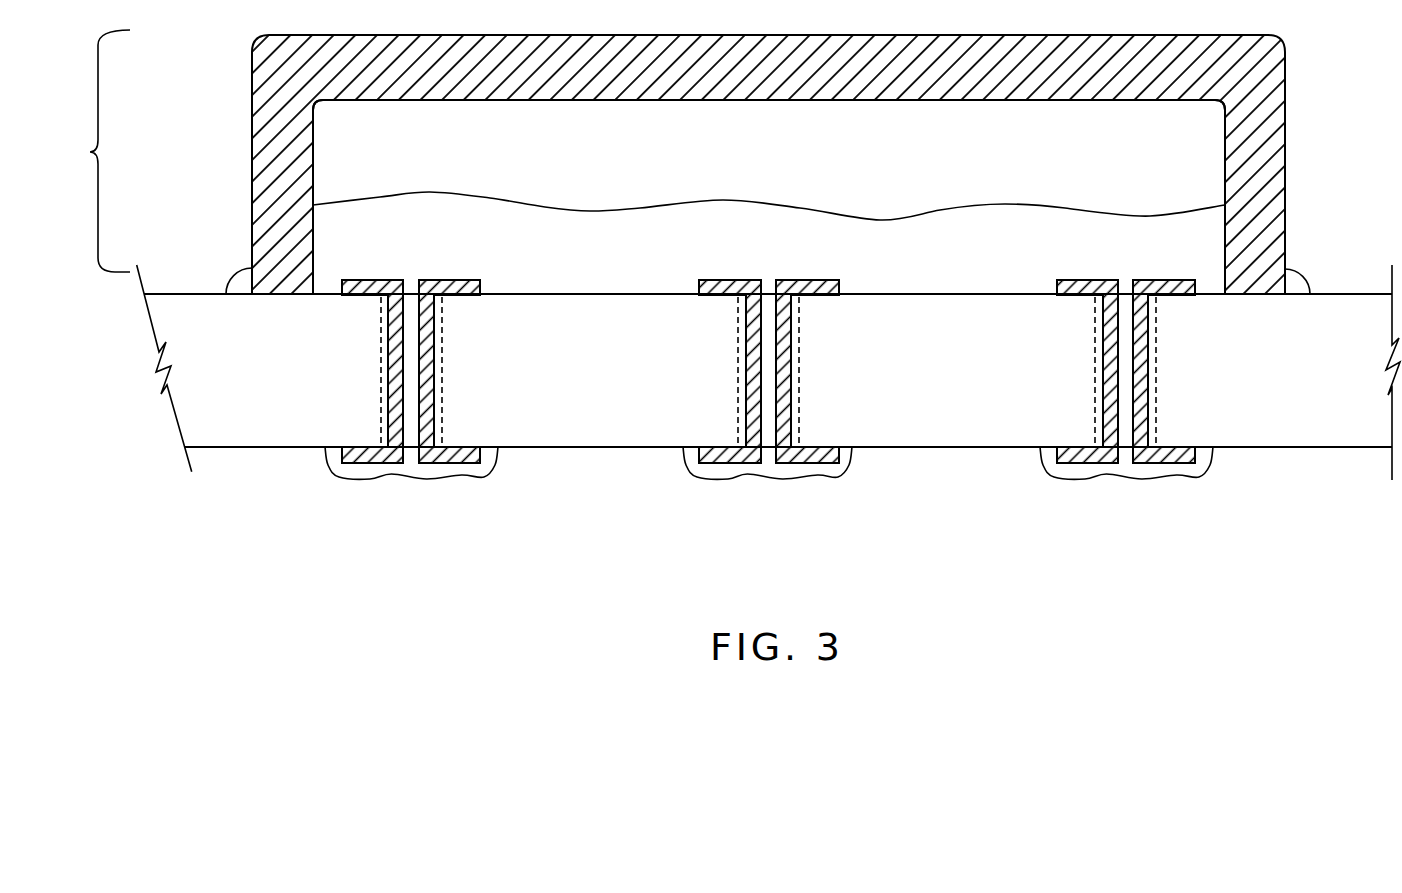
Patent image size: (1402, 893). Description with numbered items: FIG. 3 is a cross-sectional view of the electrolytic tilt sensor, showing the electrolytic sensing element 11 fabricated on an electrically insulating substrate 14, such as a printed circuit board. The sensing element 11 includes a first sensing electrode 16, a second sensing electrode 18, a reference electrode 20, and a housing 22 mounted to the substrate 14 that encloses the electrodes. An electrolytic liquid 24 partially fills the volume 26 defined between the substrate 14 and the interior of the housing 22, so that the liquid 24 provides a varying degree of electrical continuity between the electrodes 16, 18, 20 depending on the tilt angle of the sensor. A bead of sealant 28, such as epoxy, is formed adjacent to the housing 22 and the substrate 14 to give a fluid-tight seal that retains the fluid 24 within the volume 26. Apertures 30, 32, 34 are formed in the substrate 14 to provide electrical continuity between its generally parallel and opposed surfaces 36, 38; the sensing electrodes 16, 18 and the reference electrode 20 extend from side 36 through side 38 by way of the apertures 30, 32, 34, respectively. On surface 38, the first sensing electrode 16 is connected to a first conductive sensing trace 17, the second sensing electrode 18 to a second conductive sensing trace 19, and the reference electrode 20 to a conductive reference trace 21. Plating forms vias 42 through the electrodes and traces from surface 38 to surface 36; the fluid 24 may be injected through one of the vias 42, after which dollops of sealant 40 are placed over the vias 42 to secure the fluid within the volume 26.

The electrolytic sensing element 11 is at (94, 151).
The electrically insulating substrate 14 is at (768, 375).
The first sensing electrode 16 is at (473, 280).
The first electrically conductive sensing trace 17 is at (445, 463).
The second sensing electrode 18 is at (1063, 280).
The second electrically conductive sensing trace 19 is at (1157, 465).
The reference electrode 20 is at (822, 280).
The electrically conductive reference trace 21 is at (800, 463).
The housing 22 is at (252, 100).
The electrolytic liquid 24 is at (542, 223).
The volume 26 is at (1133, 145).
The bead of sealant 28 is at (238, 282).
The aperture 30 is at (380, 372).
The aperture 32 is at (1157, 375).
The aperture 34 is at (799, 372).
The surface of substrate 36 is at (602, 293).
The surface of substrate 38 is at (583, 448).
The dollops of sealant 40 is at (372, 477).
The vias 42 is at (412, 293).